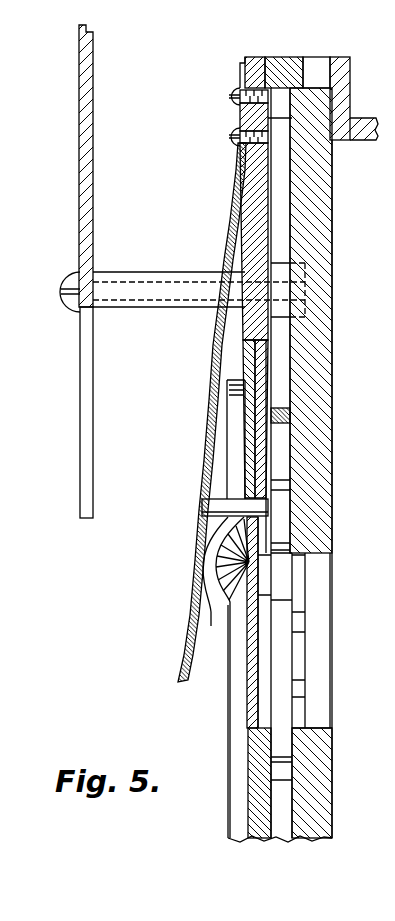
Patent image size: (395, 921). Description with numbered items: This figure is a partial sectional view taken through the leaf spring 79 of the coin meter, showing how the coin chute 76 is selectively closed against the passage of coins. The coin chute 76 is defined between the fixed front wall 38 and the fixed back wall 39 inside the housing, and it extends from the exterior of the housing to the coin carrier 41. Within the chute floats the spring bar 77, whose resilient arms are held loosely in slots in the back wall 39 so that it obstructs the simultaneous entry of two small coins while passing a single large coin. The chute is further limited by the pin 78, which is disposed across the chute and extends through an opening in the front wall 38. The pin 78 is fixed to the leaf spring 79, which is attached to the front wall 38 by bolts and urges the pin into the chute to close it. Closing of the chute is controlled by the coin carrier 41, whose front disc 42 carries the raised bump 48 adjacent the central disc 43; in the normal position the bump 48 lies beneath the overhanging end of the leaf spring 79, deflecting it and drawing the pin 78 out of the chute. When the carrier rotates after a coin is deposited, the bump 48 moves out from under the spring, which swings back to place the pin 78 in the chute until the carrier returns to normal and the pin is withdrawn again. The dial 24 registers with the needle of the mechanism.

The dial 24 is at (80, 93).
The raised portion or bump 48 is at (296, 463).
The coin chute 76 is at (280, 392).
The spring bar 77 is at (270, 457).
The coin carrier 41 is at (219, 696).
The leaf spring 79 is at (208, 437).
The pin 78 is at (206, 505).
The front disc 42 is at (231, 729).
The central disc 43 is at (283, 668).
The front wall 38 is at (258, 822).
The back wall 39 is at (322, 827).